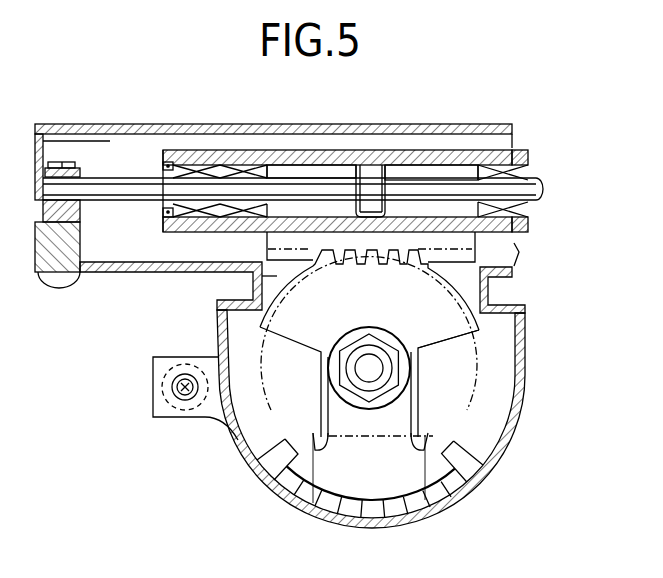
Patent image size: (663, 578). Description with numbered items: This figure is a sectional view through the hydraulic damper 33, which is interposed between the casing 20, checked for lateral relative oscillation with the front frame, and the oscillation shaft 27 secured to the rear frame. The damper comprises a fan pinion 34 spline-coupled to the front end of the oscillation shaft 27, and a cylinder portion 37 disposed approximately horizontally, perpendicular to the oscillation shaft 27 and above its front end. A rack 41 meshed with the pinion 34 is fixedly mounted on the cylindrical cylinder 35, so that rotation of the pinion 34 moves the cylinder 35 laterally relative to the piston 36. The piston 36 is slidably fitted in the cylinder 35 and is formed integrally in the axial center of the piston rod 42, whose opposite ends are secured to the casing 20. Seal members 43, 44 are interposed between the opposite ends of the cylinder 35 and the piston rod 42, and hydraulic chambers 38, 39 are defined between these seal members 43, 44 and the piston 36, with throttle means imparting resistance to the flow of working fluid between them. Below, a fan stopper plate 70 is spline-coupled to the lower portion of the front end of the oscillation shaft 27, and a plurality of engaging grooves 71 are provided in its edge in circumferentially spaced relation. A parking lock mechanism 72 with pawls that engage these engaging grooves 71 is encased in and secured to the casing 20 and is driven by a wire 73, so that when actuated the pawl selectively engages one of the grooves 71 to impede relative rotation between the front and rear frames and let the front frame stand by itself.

The casing 20 is at (130, 273).
The oscillation shaft 27 is at (356, 366).
The hydraulic damper 33 is at (493, 335).
The fan pinion 34 is at (453, 336).
The cylinder 35 is at (217, 231).
The piston 36 is at (371, 165).
The cylinder portion 37 is at (250, 149).
The hydraulic chamber 38 is at (433, 170).
The hydraulic chamber 39 is at (298, 168).
The rack 41 is at (310, 255).
The piston rod 42 is at (133, 181).
The seal member 43 is at (518, 165).
The seal member 44 is at (200, 155).
The fan stopper plate 70 is at (334, 421).
The engaging grooves 71 is at (400, 503).
The parking lock mechanism 72 is at (426, 447).
The wire 73 is at (184, 378).